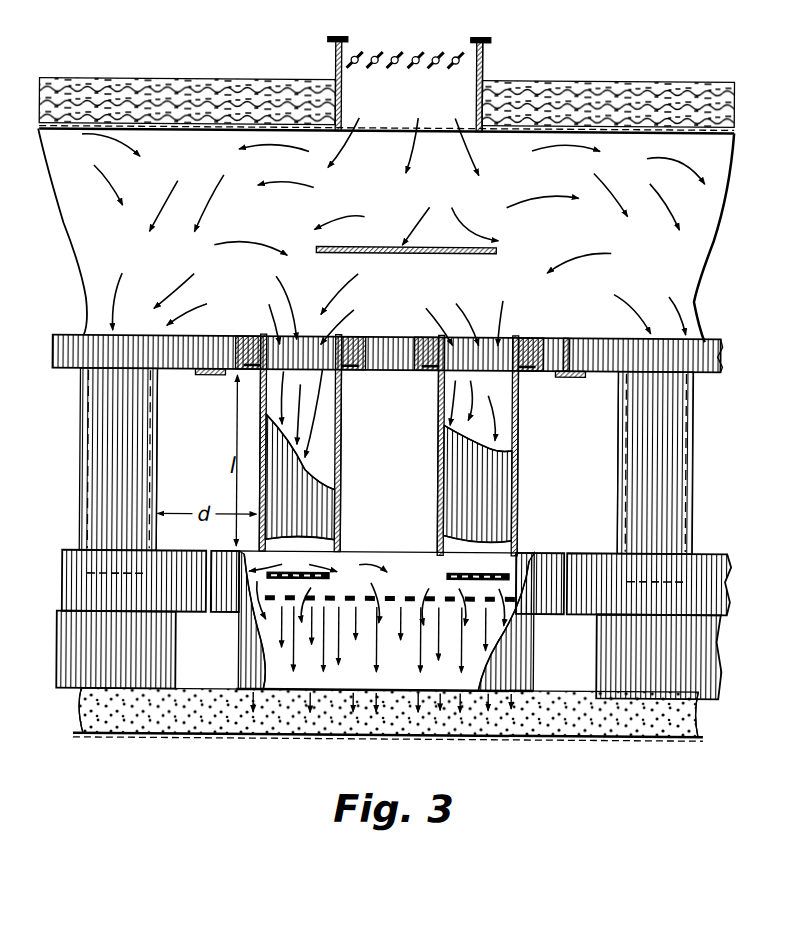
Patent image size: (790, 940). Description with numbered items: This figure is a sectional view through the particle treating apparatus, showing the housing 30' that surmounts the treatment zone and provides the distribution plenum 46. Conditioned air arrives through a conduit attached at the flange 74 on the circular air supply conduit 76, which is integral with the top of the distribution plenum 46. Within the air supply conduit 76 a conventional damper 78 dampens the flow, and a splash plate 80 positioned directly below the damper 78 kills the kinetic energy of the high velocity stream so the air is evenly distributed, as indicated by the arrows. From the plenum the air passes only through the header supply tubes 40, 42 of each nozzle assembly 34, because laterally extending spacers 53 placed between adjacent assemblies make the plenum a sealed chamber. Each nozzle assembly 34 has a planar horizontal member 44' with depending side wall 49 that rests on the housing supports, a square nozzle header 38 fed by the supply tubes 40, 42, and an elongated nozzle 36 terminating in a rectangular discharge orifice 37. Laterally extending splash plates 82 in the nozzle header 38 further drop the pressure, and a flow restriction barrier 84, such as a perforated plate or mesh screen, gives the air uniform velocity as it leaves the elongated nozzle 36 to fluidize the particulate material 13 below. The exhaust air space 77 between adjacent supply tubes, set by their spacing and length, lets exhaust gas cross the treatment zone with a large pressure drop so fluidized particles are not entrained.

The flange 74 is at (333, 38).
The air supply conduit 76 is at (484, 58).
The damper 78 is at (422, 70).
The housing 30' is at (387, 92).
The distribution plenum 46 is at (588, 240).
The splash plate 80 is at (440, 253).
The nozzle assembly 34 is at (72, 337).
The planar horizontal member 44' is at (374, 338).
The spacer 53 is at (206, 380).
The side wall 49 is at (722, 350).
The exhaust air space 77 is at (201, 461).
The header supply tube 40 is at (342, 496).
The header supply tube 42 is at (440, 464).
The nozzle header 38 is at (522, 562).
The splash plate 82 is at (134, 578).
The flow restriction barrier 84 is at (358, 615).
The elongated nozzle 36 is at (370, 672).
The particulate material 13 is at (225, 705).
The discharge orifice 37 is at (408, 739).